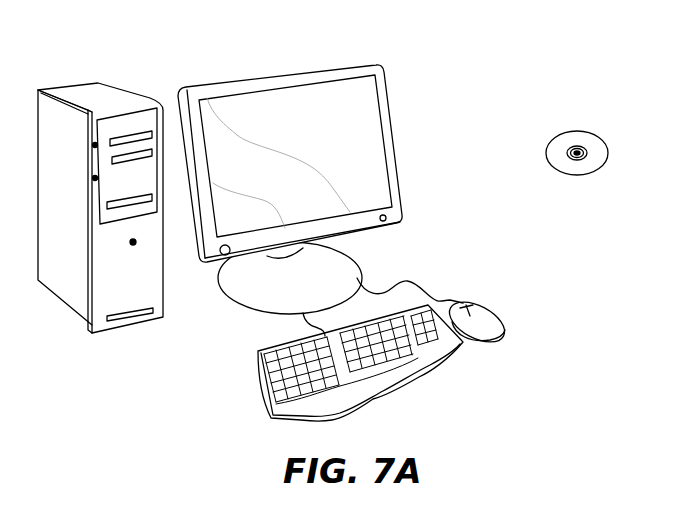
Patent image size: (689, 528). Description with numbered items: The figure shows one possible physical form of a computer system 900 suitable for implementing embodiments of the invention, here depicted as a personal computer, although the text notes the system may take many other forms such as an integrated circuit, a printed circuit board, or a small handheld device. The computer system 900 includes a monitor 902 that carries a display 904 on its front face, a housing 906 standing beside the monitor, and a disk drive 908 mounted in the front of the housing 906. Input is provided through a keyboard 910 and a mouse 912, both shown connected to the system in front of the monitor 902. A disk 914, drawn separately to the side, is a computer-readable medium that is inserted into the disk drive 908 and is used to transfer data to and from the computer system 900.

The computer system 900 is at (505, 50).
The monitor 902 is at (398, 160).
The display 904 is at (355, 103).
The housing 906 is at (88, 92).
The disk drive 908 is at (143, 201).
The keyboard 910 is at (263, 390).
The mouse 912 is at (497, 312).
The disk 914 is at (594, 132).